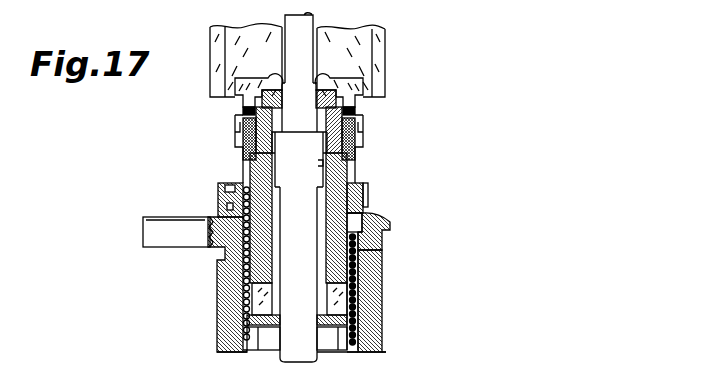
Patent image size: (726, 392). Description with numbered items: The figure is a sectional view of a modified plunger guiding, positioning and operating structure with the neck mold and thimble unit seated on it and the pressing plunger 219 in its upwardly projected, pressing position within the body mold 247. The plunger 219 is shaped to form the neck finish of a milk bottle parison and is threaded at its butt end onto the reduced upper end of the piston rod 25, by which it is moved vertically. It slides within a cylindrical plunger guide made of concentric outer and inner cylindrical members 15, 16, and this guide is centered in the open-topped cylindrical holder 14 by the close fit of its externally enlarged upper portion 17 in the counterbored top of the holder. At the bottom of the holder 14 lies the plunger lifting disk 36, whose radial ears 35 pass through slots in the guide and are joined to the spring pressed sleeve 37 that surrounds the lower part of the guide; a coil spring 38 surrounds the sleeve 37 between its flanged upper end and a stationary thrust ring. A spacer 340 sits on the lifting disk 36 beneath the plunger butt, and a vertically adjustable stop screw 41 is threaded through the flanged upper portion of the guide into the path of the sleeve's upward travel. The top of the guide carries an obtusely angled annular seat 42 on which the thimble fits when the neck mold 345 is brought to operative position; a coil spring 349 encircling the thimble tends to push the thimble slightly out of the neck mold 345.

The pressing plunger 219 is at (310, 16).
The body mold 247 is at (307, 46).
The coil spring 349 is at (362, 112).
The neck mold 345 is at (362, 137).
The annular seat 42 is at (237, 155).
The stop screw 41 is at (240, 180).
The inner cylindrical member 16 is at (367, 184).
The piston rod 25 is at (368, 200).
The externally enlarged upper portion 17 is at (376, 212).
The outer cylindrical member 15 is at (382, 242).
The coil spring 38 is at (382, 258).
The cylindrical holder 14 is at (383, 277).
The spring pressed sleeve 37 is at (360, 286).
The spacer 340 is at (360, 313).
The radial ears 35 is at (360, 327).
The plunger lifting disk 36 is at (337, 352).